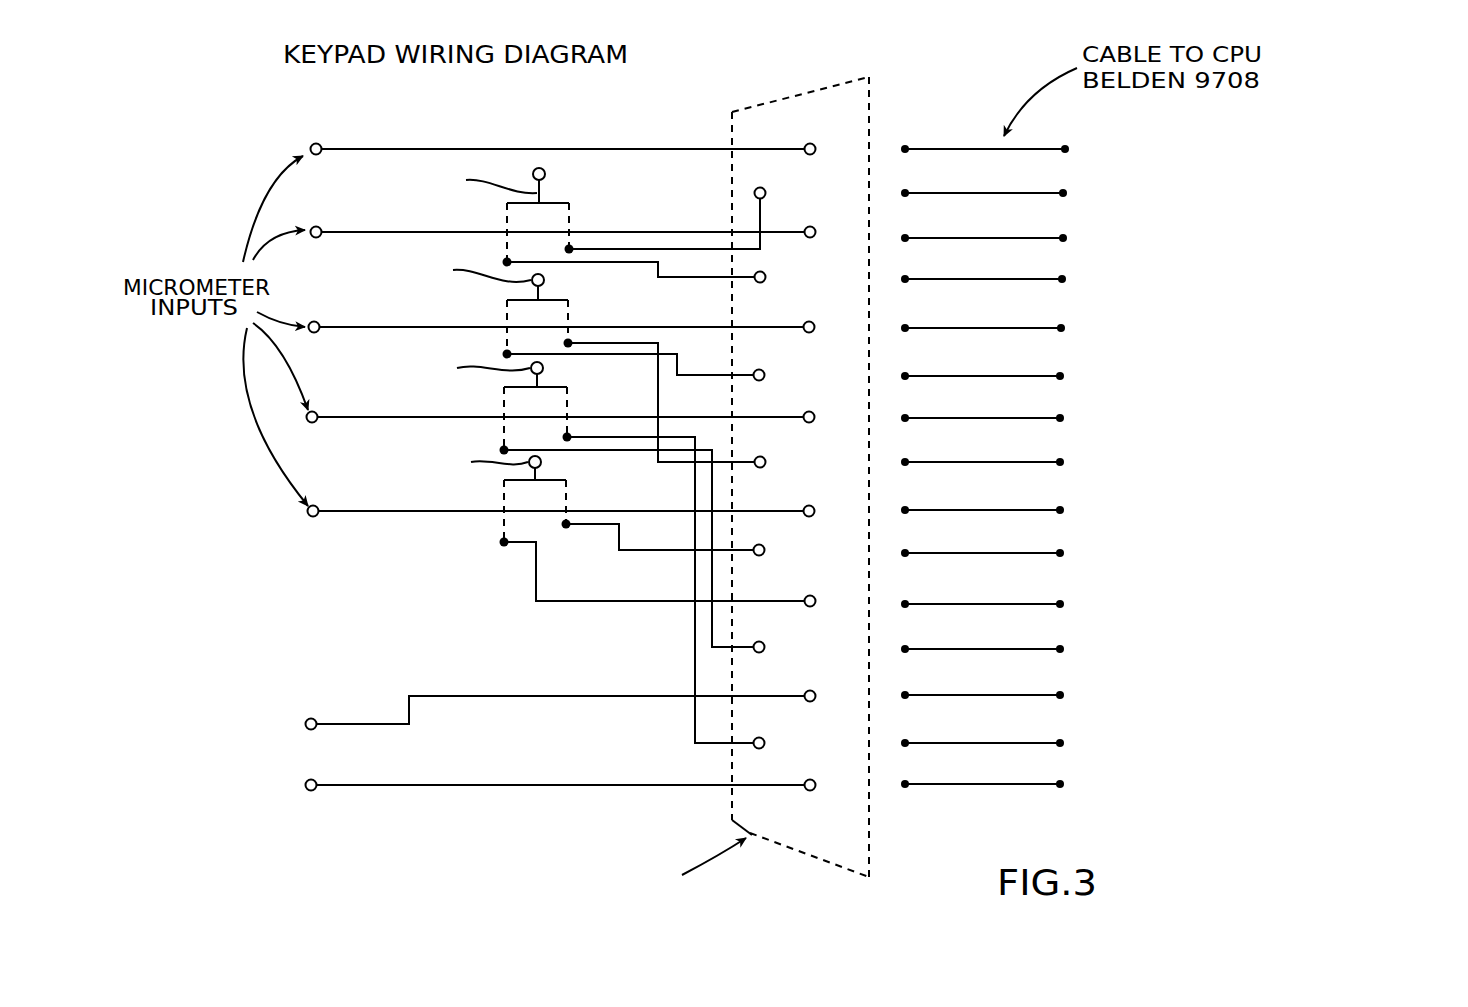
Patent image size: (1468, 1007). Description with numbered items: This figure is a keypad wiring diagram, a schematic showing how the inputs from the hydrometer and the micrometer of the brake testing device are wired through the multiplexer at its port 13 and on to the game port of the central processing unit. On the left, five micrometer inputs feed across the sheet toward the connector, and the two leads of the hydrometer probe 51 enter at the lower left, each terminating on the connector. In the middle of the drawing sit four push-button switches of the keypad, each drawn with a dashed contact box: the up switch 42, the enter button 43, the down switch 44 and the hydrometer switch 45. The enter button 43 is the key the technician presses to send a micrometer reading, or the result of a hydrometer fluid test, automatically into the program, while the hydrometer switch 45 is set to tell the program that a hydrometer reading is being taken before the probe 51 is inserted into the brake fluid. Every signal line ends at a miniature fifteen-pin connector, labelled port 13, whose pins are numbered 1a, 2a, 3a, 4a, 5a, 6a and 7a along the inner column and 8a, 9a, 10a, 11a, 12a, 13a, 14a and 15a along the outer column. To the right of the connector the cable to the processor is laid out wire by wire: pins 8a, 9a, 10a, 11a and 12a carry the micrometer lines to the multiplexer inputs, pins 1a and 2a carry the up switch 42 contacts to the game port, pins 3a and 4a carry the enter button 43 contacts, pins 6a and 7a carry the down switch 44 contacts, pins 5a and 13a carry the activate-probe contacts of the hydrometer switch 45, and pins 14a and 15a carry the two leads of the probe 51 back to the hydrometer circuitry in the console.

The port 13 is at (785, 823).
The up switch 42 is at (546, 172).
The enter button 43 is at (545, 282).
The down switch 44 is at (544, 368).
The hydrometer switch 45 is at (542, 462).
The probe 51 is at (343, 726).
The connector pin 1a is at (1026, 204).
The connector pin 2a is at (1023, 288).
The connector pin 3a is at (1044, 385).
The connector pin 4a is at (1040, 470).
The connector pin 5a is at (1099, 563).
The connector pin 6a is at (1040, 658).
The connector pin 7a is at (1050, 754).
The connector pin 8a is at (1030, 160).
The connector pin 9a is at (1029, 245).
The connector pin 10a is at (1020, 337).
The connector pin 11a is at (1019, 427).
The connector pin 12a is at (1019, 520).
The connector pin 13a is at (1124, 613).
The connector pin 14a is at (1092, 698).
The connector pin 15a is at (1095, 792).